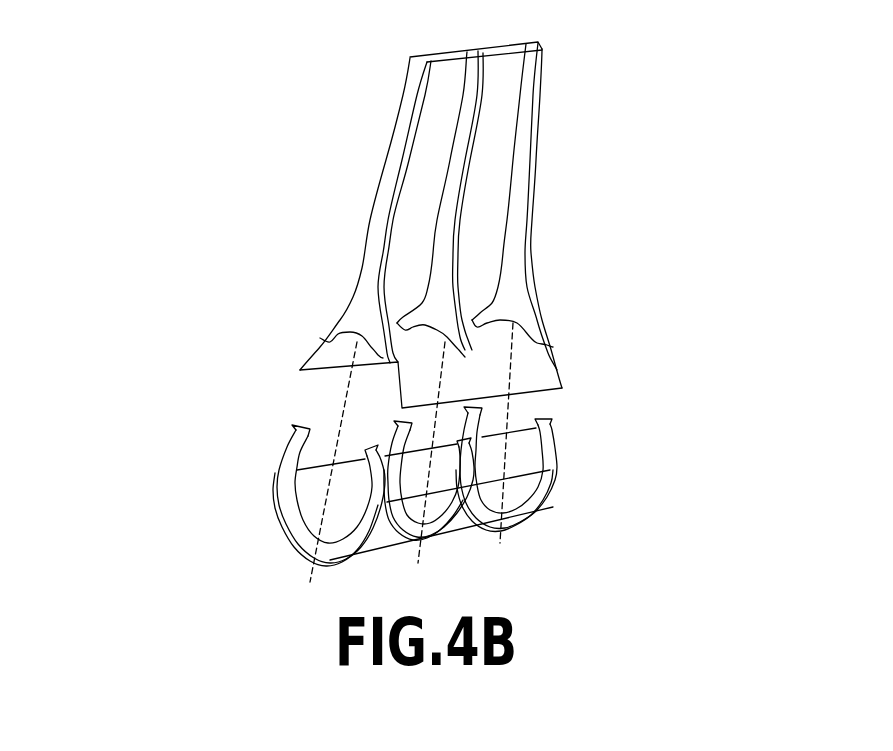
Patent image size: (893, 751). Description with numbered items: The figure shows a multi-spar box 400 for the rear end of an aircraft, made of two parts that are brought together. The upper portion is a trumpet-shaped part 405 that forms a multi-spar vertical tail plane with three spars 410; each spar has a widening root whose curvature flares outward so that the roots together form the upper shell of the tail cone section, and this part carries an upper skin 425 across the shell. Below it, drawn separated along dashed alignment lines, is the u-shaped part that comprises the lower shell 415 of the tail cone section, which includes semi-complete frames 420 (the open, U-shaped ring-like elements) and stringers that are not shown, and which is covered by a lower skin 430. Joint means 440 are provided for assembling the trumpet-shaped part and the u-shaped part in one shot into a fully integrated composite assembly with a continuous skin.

The multi-spar box 400 is at (418, 312).
The trumpet-shaped part 405 is at (469, 225).
The spars 410 is at (362, 313).
The upper skin 425 is at (400, 358).
The lower shell 415 is at (430, 467).
The semi-complete frames 420 is at (293, 433).
The lower skin 430 is at (276, 486).
The joint means 440 is at (547, 423).